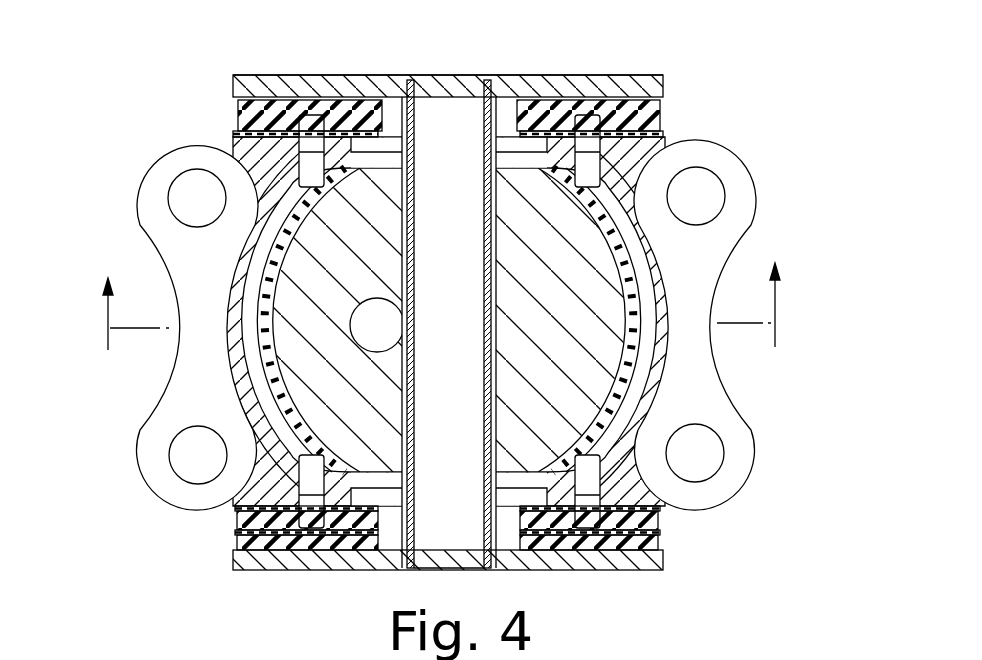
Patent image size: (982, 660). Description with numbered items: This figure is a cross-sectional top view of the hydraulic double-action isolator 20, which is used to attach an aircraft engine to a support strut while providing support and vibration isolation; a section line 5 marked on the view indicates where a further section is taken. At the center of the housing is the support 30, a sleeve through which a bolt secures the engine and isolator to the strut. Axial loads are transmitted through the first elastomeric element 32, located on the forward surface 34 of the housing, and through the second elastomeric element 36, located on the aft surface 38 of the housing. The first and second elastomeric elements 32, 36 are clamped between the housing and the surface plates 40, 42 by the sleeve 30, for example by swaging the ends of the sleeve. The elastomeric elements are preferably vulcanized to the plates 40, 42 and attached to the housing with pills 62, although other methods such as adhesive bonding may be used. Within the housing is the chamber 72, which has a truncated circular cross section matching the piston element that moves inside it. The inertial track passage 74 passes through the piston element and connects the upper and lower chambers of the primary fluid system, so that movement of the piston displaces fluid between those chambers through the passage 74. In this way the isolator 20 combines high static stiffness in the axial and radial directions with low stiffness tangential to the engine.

The hydraulic double-action isolator 20 is at (446, 323).
The support 30 is at (477, 82).
The first elastomeric element 32 is at (417, 583).
The forward surface 34 is at (217, 514).
The second elastomeric element 36 is at (383, 87).
The aft surface 38 is at (210, 121).
The surface plate 40 is at (267, 573).
The surface plate 42 is at (272, 76).
The pills 62 is at (312, 133).
The chamber 72 is at (632, 242).
The inertial track passage 74 is at (363, 336).
The section line 5- 5 is at (440, 286).